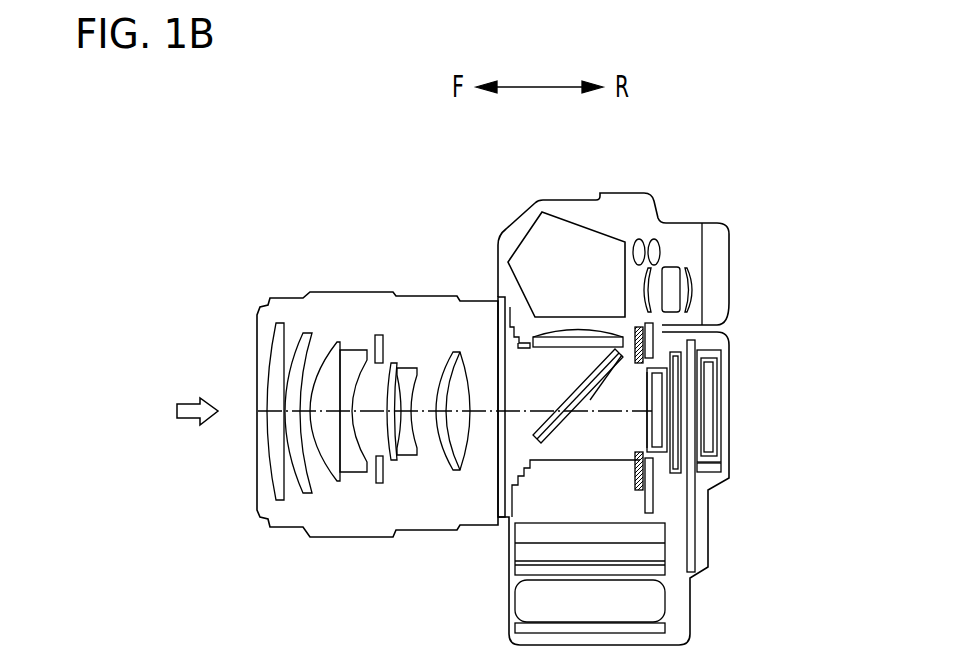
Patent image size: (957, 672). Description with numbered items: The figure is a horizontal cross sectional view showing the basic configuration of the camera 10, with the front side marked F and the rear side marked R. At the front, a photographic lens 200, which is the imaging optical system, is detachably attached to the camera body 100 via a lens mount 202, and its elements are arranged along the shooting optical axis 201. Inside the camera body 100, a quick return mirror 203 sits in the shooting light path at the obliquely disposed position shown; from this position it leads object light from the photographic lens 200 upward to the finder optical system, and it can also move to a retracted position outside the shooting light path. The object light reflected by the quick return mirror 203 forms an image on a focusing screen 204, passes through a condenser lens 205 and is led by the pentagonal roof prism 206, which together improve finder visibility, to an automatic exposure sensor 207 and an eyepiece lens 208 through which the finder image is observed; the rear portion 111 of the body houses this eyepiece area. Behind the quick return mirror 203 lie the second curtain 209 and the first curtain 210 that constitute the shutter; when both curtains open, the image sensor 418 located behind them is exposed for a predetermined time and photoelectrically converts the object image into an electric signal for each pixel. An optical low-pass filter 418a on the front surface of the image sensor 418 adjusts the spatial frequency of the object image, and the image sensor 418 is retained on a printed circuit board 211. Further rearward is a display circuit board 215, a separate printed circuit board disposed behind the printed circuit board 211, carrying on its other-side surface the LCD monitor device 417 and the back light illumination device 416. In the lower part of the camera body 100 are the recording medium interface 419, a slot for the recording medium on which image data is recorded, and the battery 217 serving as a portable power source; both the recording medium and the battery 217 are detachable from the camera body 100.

The camera 10 is at (785, 162).
The camera body 100 is at (656, 212).
The display unit 111 is at (715, 283).
The photographic lens 200 is at (355, 303).
The shooting optical axis 201 is at (376, 458).
The lens mount 202 is at (497, 488).
The quick return mirror 203 is at (498, 375).
The focusing screen 204 is at (553, 342).
The condenser lens 205 is at (580, 330).
The pentagonal roof prism 206 is at (588, 229).
The automatic exposure sensor 207 is at (657, 252).
The eyepiece lens 208 is at (692, 278).
The second curtain 209 is at (650, 343).
The first curtain 210 is at (647, 478).
The printed circuit board 211 is at (676, 440).
The display circuit board 215 is at (672, 380).
The back light illumination device 416 is at (690, 403).
The LCD monitor device 417 is at (706, 420).
The image sensor 418 is at (663, 378).
The optical low-pass filter 418a is at (650, 425).
The recording medium interface 419 is at (657, 535).
The battery 217 is at (653, 602).